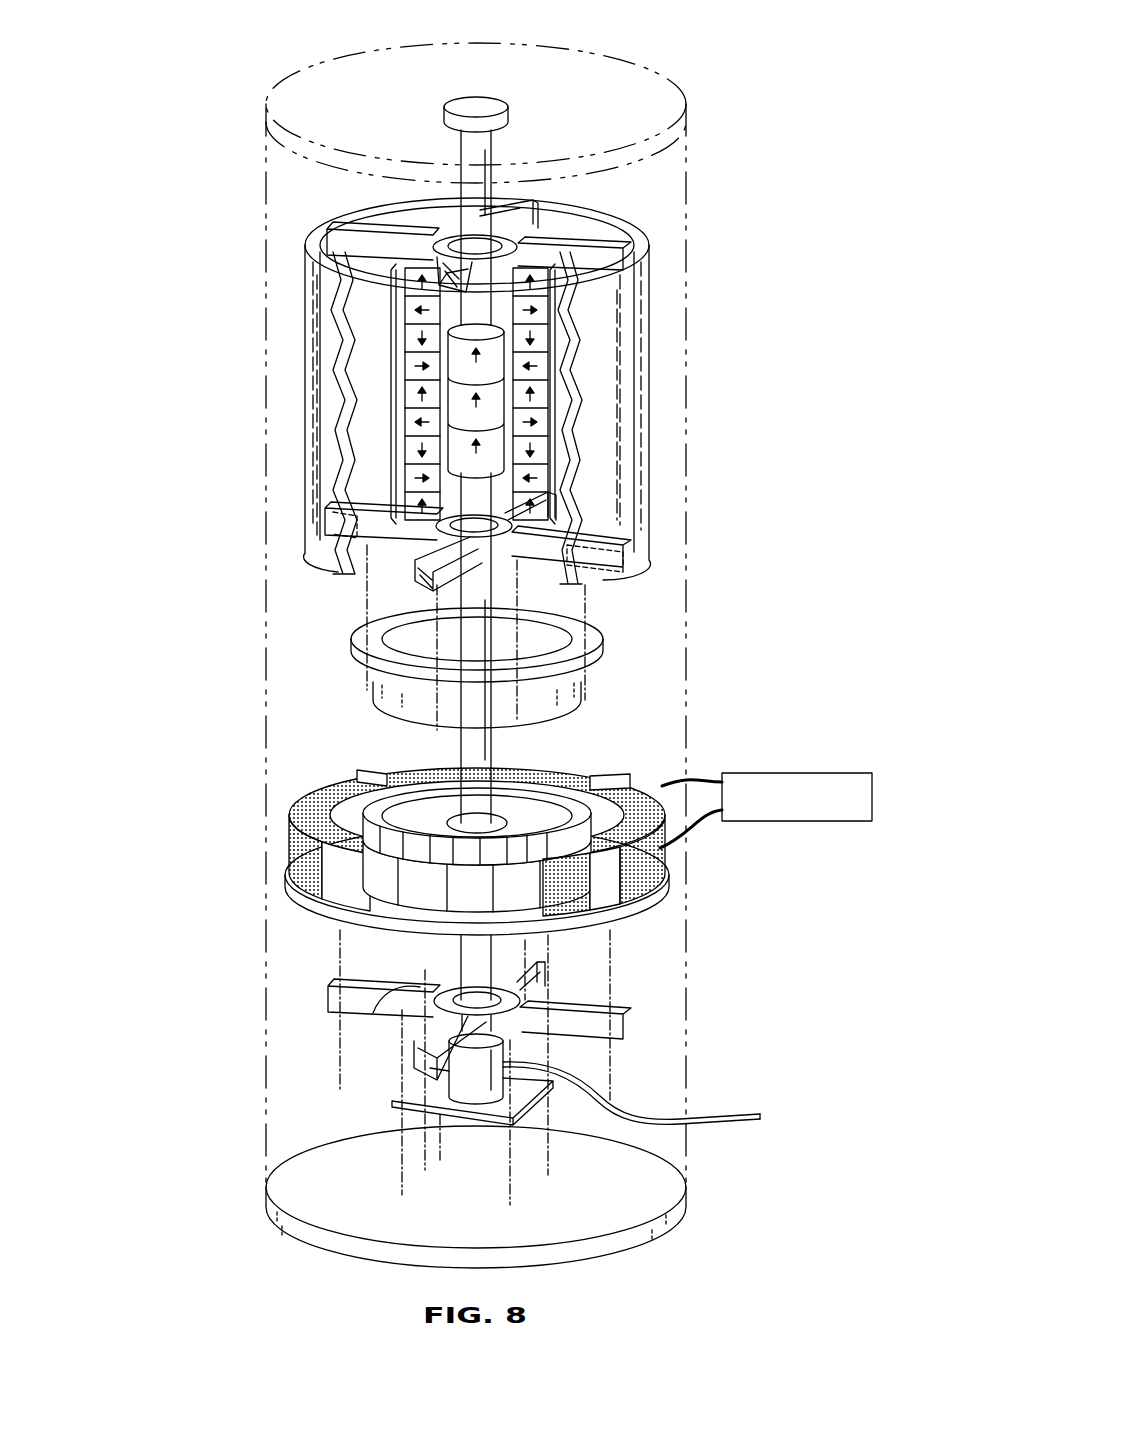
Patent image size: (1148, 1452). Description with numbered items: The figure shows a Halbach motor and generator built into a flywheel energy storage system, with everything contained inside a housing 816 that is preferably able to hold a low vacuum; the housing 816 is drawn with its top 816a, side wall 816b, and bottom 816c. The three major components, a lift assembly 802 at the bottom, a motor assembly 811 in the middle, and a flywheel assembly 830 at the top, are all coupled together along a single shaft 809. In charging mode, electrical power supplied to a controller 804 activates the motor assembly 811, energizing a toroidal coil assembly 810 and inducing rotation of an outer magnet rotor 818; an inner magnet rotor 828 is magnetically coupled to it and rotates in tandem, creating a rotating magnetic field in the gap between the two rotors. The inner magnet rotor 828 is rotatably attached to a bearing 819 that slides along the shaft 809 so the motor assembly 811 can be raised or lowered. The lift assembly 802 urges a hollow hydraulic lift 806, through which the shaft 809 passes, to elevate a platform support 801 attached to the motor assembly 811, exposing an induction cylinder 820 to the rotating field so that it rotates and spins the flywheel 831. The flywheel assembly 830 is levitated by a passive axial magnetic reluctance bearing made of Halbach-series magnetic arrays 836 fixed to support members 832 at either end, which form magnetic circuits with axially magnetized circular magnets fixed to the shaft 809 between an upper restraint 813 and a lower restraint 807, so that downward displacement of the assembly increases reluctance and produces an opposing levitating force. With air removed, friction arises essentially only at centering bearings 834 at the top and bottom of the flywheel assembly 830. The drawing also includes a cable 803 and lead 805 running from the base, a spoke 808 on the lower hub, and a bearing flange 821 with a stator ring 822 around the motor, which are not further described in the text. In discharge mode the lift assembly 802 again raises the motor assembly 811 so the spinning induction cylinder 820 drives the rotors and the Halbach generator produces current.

The platform support 801 is at (334, 988).
The lift assembly 802 is at (228, 960).
The cable 803 is at (610, 1104).
The controller 804 is at (795, 821).
The cable lead 805 is at (722, 1122).
The hydraulic lift 806 is at (482, 1095).
The lower restraint 807 is at (408, 1096).
The spoke 808 is at (376, 1014).
The shaft 809 is at (492, 161).
The toroidal coil assembly 810 is at (578, 796).
The motor assembly 811 is at (419, 661).
The upper restraint 813 is at (509, 108).
The housing 816 is at (686, 486).
The housing top 816a is at (622, 66).
The housing side wall 816b is at (688, 313).
The housing bottom 816c is at (640, 1247).
The outer magnet rotor 818 is at (540, 902).
The bearing 819 is at (412, 822).
The induction cylinder 820 is at (378, 712).
The bearing flange 821 is at (354, 654).
The stator ring 822 is at (344, 800).
The inner magnet rotor 828 is at (608, 792).
The flywheel assembly 830 is at (198, 220).
The flywheel 831 is at (320, 242).
The support members 832 is at (598, 258).
The centering bearings 834 is at (456, 244).
The magnetic arrays 836 is at (378, 386).